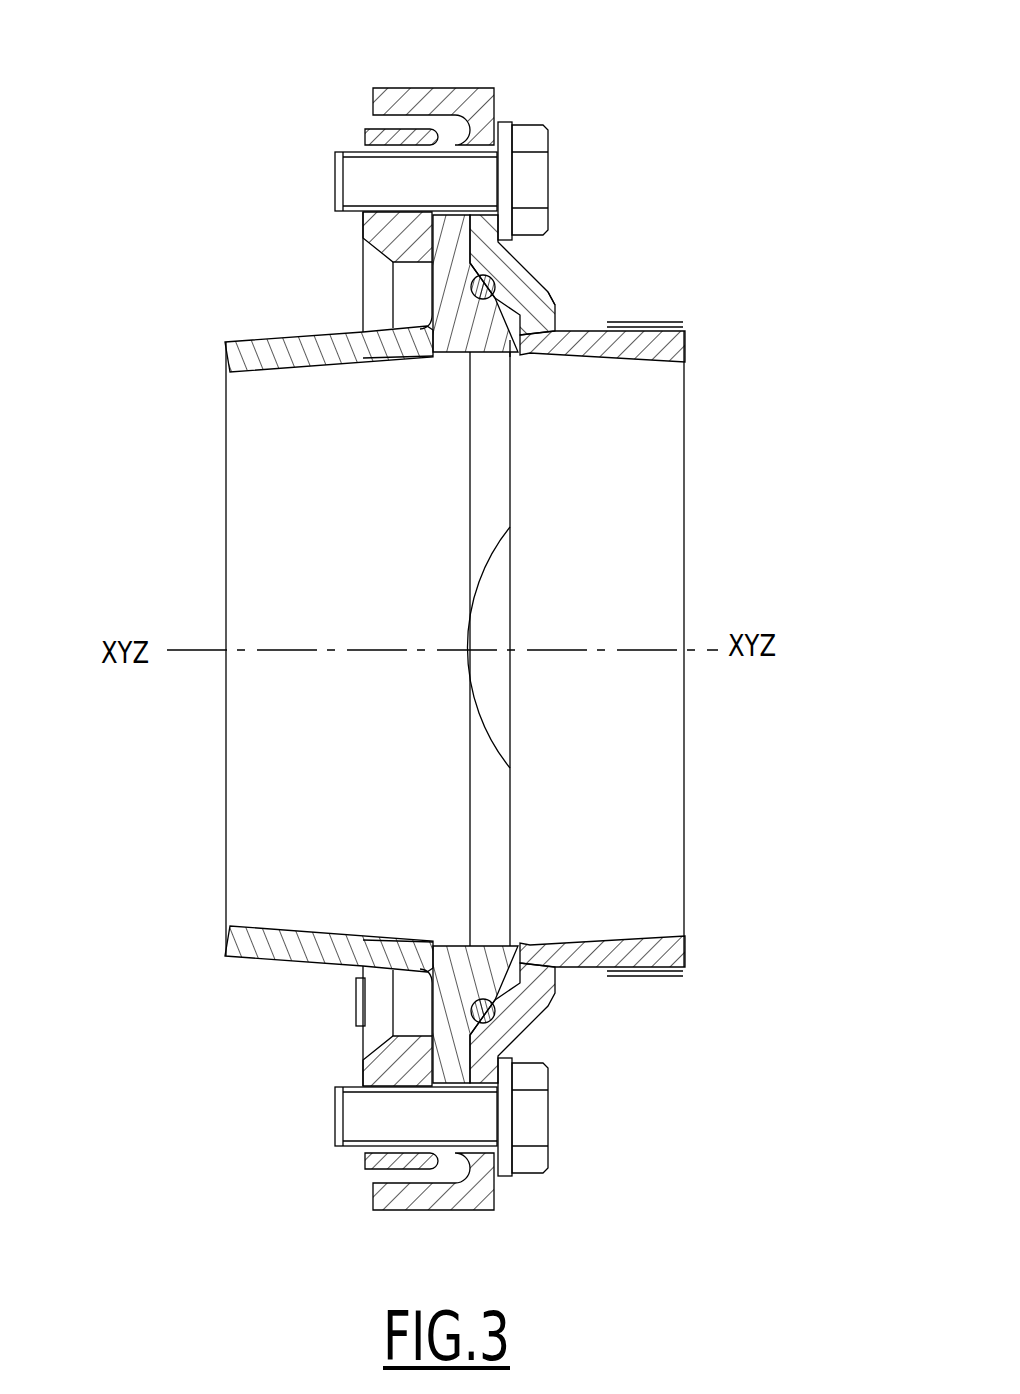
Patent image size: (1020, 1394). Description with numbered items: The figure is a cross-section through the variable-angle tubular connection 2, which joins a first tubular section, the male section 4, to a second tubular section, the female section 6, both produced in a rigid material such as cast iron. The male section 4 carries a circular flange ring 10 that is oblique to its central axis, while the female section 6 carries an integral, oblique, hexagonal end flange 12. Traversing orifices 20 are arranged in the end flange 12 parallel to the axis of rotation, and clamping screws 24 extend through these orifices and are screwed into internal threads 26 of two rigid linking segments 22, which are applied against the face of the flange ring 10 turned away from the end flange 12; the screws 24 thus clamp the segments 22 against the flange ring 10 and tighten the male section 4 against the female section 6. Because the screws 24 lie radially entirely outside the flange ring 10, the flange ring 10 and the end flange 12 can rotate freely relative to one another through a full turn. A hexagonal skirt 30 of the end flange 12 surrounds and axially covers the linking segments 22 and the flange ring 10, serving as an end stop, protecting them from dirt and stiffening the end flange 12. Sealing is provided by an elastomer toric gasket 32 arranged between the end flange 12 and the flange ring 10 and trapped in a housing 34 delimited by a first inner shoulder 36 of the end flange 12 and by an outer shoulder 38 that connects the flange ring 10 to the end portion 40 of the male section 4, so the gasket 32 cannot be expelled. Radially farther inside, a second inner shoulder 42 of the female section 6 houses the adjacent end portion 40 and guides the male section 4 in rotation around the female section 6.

The variable-angle tubular connection 2 is at (620, 1079).
The male section 4 is at (268, 962).
The female section 6 is at (640, 968).
The flange ring 10 is at (432, 267).
The end flange 12 is at (492, 128).
The traversing orifices 20 is at (470, 157).
The linking segments 22 is at (373, 137).
The clamping screws 24 is at (533, 180).
The internal threads 26 is at (361, 158).
The hexagonal skirt 30 is at (407, 102).
The toric gasket 32 is at (520, 300).
The housing 34 is at (478, 366).
The first inner shoulder 36 is at (500, 250).
The outer shoulder 38 is at (378, 358).
The end portion 40 is at (512, 358).
The second inner shoulder 42 is at (545, 305).